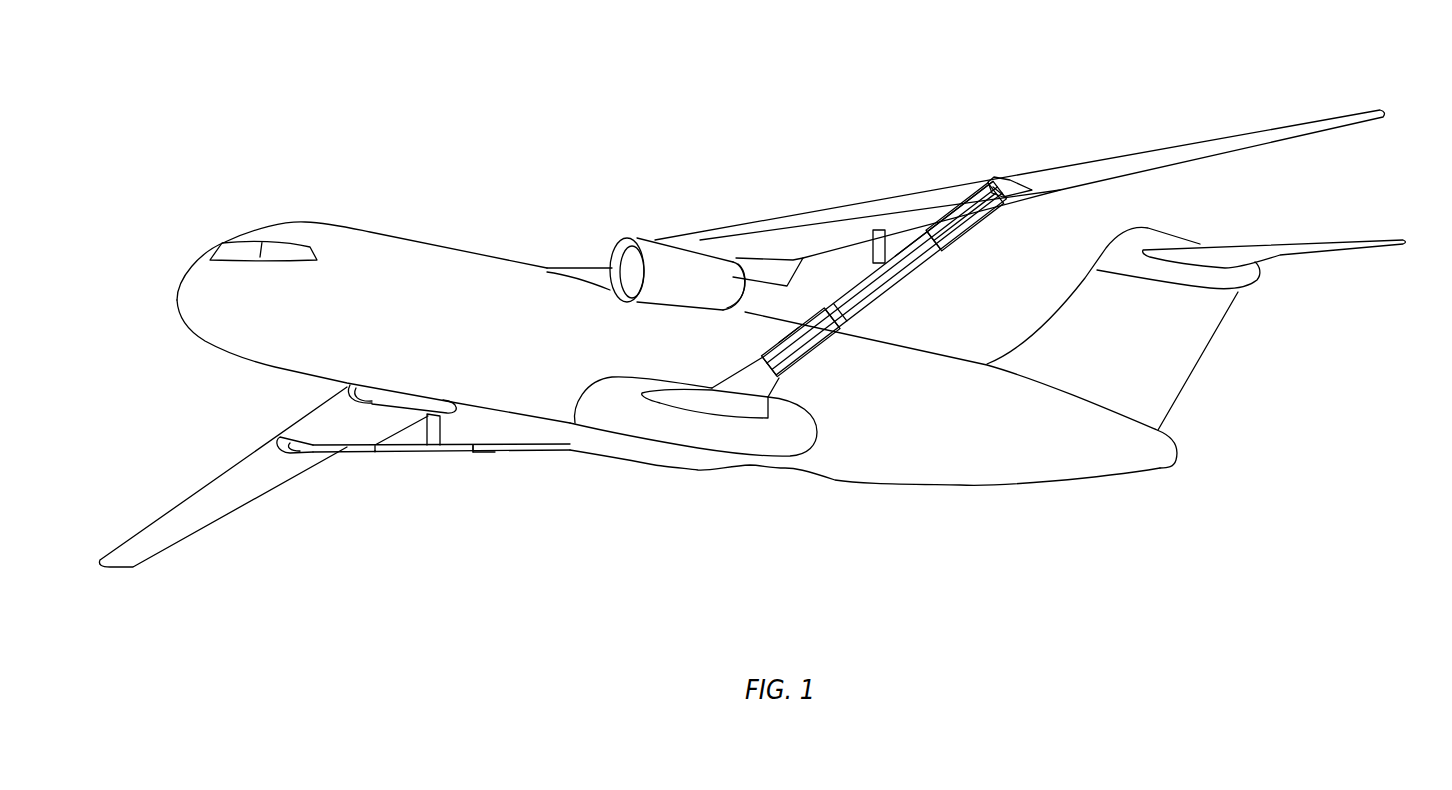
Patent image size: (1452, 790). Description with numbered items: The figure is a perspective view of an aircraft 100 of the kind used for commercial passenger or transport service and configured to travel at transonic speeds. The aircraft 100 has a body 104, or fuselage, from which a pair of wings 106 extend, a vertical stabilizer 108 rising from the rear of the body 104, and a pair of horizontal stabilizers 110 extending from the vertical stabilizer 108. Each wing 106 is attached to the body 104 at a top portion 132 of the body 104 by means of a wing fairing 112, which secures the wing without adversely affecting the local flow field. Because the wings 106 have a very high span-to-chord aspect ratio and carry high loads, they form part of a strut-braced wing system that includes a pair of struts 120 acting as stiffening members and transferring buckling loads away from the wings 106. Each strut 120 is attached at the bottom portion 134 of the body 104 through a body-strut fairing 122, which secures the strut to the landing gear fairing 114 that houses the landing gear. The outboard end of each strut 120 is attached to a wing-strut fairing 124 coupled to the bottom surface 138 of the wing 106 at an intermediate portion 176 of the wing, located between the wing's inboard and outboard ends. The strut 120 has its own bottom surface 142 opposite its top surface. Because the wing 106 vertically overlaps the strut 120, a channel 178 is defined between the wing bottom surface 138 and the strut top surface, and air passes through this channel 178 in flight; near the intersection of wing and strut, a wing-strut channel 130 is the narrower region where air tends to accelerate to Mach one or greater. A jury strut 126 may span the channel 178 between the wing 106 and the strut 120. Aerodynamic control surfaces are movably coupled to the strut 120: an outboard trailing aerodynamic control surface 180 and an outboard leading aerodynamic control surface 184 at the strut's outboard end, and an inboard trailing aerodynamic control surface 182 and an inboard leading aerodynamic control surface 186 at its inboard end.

The aircraft 100 is at (353, 197).
The body 104 is at (468, 251).
The wings 106 is at (873, 196).
The vertical stabilizer 108 is at (1168, 355).
The horizontal stabilizers 110 is at (1228, 260).
The wing fairing 112 is at (603, 267).
The landing gear fairing 114 is at (627, 413).
The struts 120 is at (921, 273).
The body-strut fairing 122 is at (706, 407).
The wing-strut fairing 124 is at (1002, 190).
The jury strut 126 is at (878, 262).
The wing-strut channel 130 is at (916, 238).
The top portion 132 is at (512, 258).
The bottom portion 134 is at (527, 377).
The bottom surface 138 is at (833, 228).
The bottom surface 142 is at (843, 313).
The intermediate portion 176 is at (998, 176).
The channel 178 is at (761, 295).
The outboard trailing aerodynamic control surface 180 is at (976, 233).
The inboard trailing aerodynamic control surface 182 is at (819, 349).
The outboard leading aerodynamic control surface 184 is at (954, 214).
The inboard leading aerodynamic control surface 186 is at (789, 334).